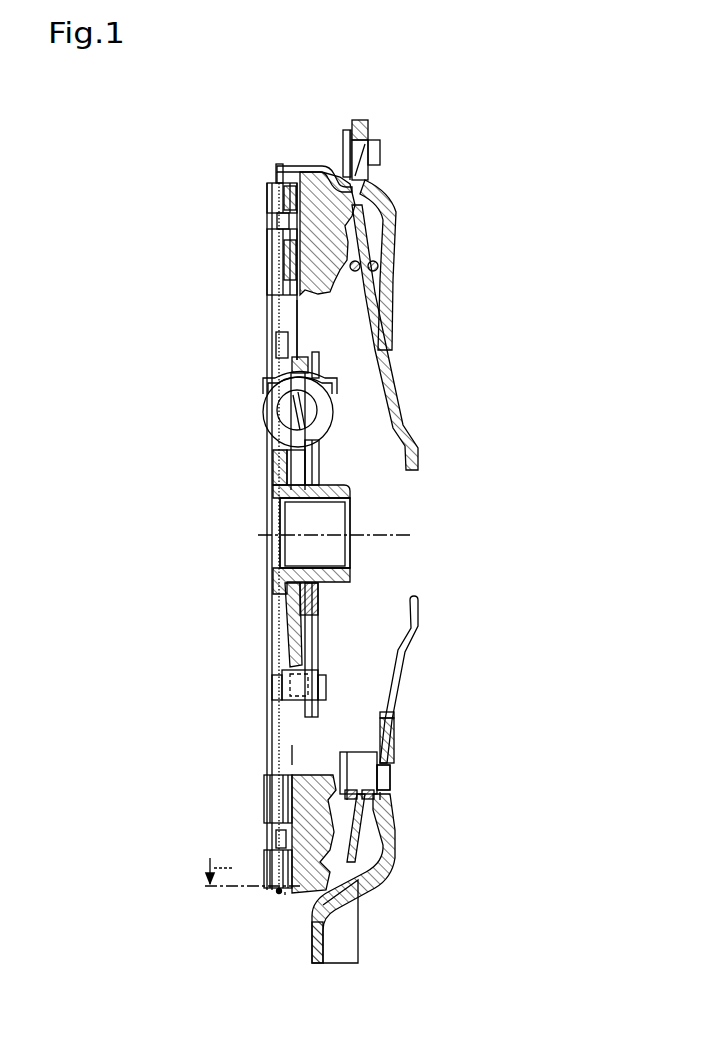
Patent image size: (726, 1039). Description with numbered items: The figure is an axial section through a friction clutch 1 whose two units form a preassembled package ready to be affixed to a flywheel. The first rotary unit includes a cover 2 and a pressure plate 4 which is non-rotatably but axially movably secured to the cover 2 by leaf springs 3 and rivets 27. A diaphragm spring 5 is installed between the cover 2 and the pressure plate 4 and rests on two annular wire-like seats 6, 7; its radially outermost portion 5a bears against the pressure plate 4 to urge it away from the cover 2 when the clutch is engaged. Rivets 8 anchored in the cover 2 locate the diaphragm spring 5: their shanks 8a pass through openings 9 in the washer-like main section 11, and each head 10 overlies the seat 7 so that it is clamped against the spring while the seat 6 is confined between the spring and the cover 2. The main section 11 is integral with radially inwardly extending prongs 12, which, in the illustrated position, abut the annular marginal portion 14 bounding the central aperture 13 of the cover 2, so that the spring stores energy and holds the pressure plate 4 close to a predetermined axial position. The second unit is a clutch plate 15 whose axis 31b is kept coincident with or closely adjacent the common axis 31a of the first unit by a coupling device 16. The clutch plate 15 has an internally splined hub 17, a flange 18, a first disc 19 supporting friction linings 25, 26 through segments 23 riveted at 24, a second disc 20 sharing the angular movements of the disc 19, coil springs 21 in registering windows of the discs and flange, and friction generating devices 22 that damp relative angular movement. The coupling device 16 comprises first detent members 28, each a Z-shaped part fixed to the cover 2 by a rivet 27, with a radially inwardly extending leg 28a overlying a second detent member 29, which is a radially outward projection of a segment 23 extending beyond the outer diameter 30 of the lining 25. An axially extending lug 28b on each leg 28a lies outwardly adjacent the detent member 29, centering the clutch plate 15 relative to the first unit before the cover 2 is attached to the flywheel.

The friction clutch 1 is at (405, 165).
The cover 2 is at (396, 232).
The leaf springs 3 is at (355, 120).
The pressure plate 4 is at (297, 170).
The diaphragm spring 5 is at (395, 393).
The radially outermost portion of the diaphragm spring 5a is at (362, 218).
The seat 6 is at (387, 795).
The seat 7 is at (388, 832).
The rivets 8 is at (385, 775).
The head 10 is at (383, 777).
The shanks 8a is at (380, 797).
The openings 9 is at (380, 762).
The main section 11 is at (363, 798).
The prongs 12 is at (395, 678).
The central aperture 13 is at (393, 714).
The marginal portion 14 is at (390, 735).
The clutch plate 15 is at (290, 640).
The coupling device 16 is at (311, 166).
The hub 17 is at (345, 496).
The flange 18 is at (290, 614).
The first disc 19 is at (280, 672).
The second disc 20 is at (318, 646).
The coil springs 21 is at (268, 435).
The friction generating devices 22 is at (284, 462).
The segments 23 is at (276, 323).
The rivets 24 is at (290, 362).
The friction lining 25 is at (272, 790).
The friction lining 26 is at (285, 893).
The rivets 27 is at (375, 152).
The first detent member 28 is at (276, 178).
The radially inwardly extending leg 28a is at (270, 188).
The lug 28b is at (270, 195).
The second detent member 29 is at (277, 892).
The outer diameter 30 is at (249, 853).
The common axis 31a is at (377, 535).
The axis 31b is at (315, 533).